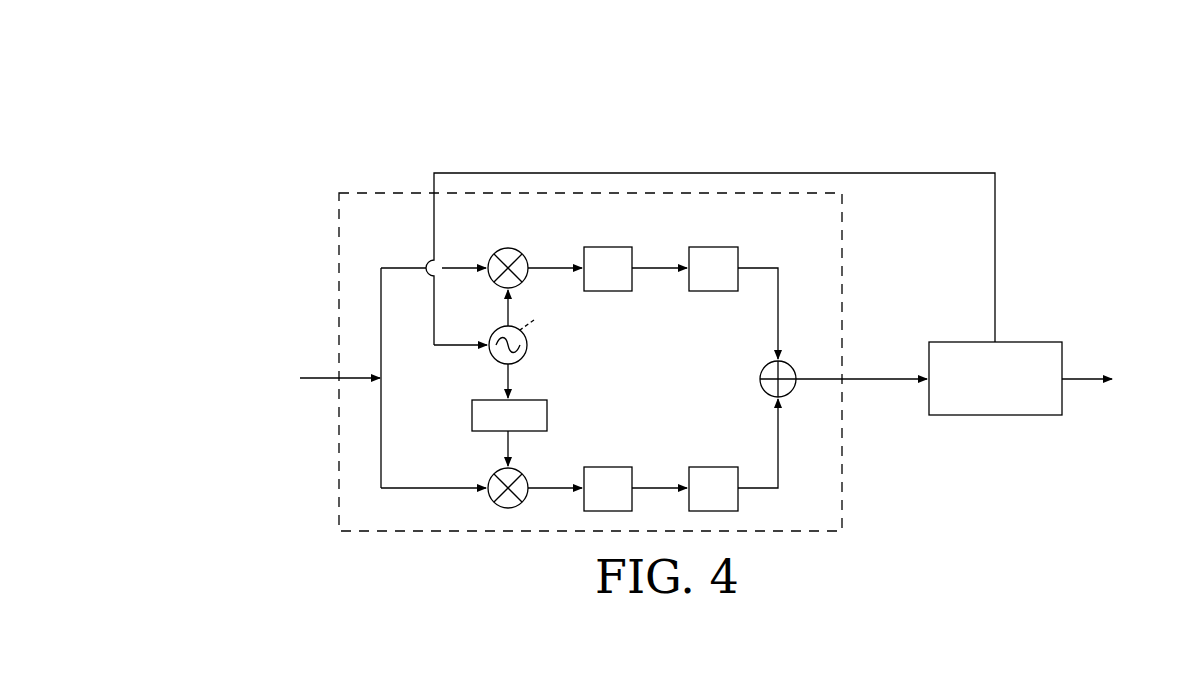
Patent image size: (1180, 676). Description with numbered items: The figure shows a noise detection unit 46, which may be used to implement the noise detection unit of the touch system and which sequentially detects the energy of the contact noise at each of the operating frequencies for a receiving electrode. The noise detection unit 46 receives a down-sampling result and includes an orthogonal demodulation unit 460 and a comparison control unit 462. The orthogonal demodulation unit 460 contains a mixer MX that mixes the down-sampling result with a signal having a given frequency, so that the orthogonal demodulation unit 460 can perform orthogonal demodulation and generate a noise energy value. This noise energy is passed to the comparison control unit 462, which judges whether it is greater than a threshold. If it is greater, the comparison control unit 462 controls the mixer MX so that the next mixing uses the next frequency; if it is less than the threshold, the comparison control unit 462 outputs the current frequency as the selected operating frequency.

The noise detection unit 46 is at (305, 68).
The orthogonal demodulation unit 460 is at (346, 193).
The comparison control unit 462 is at (1038, 342).